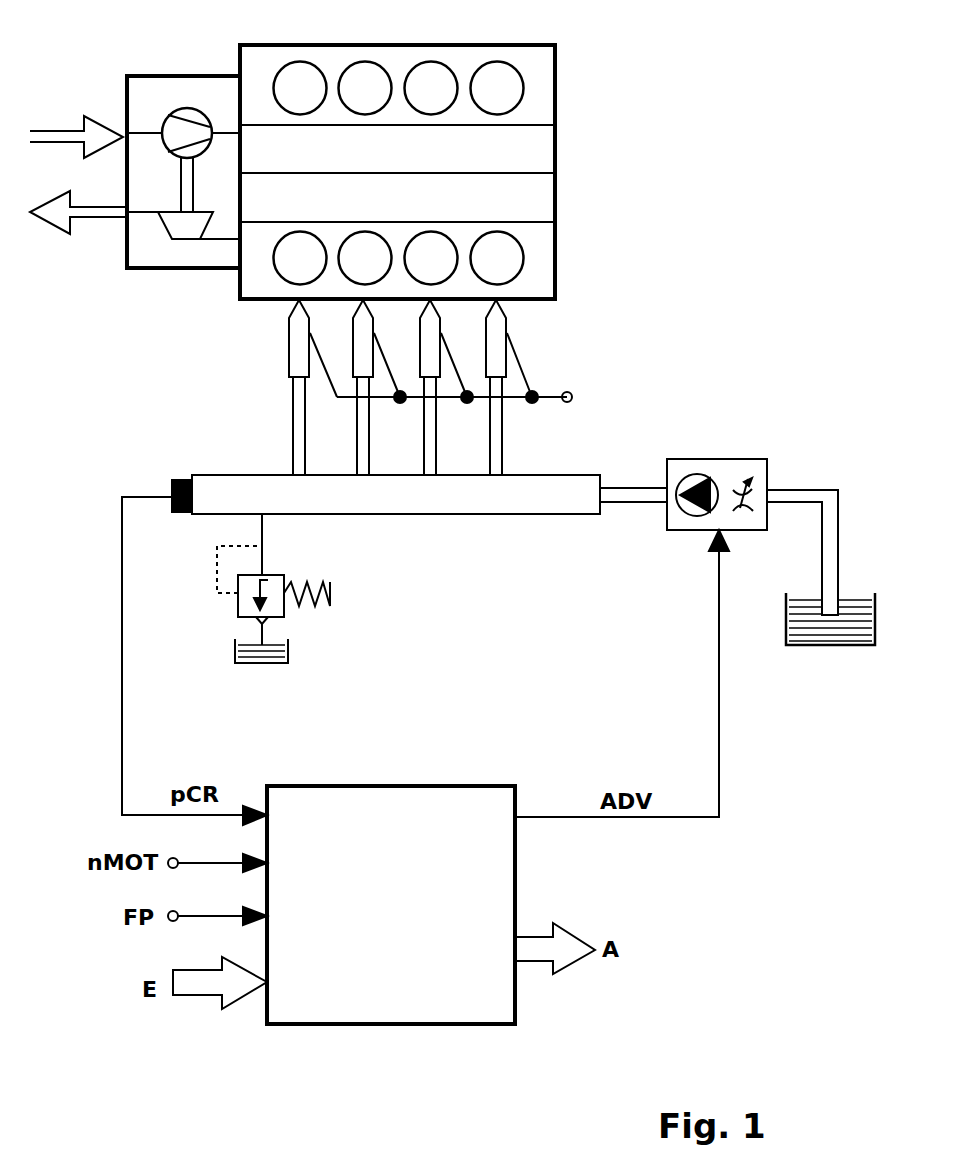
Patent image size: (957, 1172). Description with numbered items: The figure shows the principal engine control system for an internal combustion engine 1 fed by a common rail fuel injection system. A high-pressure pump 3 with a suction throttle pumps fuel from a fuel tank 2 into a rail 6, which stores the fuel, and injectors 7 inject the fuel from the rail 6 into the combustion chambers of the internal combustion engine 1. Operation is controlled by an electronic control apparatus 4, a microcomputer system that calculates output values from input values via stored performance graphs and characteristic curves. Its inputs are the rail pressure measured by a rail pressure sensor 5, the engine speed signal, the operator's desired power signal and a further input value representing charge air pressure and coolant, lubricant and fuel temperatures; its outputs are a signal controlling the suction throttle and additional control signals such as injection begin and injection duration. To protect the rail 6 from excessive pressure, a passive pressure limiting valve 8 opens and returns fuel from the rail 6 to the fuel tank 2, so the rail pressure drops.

The internal combustion engine 1 is at (540, 72).
The fuel tank 2 is at (282, 647).
The high-pressure pump 3 is at (762, 463).
The electronic control apparatus 4 is at (410, 985).
The rail pressure sensor 5 is at (182, 480).
The rail 6 is at (530, 517).
The injectors 7 is at (298, 333).
The pressure limiting valve 8 is at (245, 612).